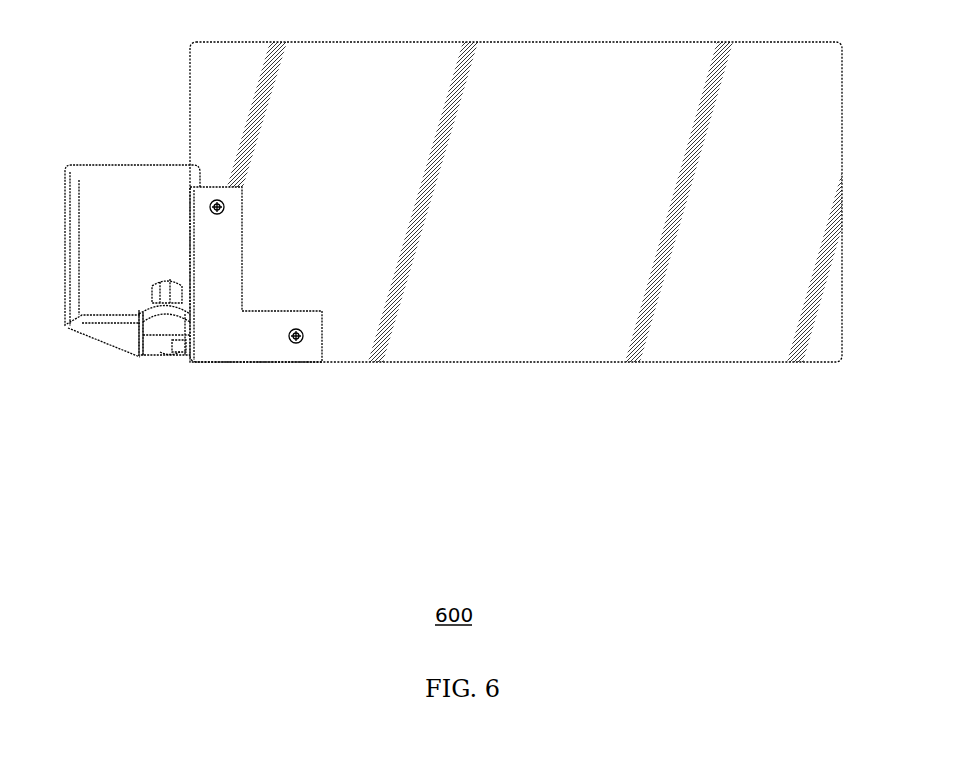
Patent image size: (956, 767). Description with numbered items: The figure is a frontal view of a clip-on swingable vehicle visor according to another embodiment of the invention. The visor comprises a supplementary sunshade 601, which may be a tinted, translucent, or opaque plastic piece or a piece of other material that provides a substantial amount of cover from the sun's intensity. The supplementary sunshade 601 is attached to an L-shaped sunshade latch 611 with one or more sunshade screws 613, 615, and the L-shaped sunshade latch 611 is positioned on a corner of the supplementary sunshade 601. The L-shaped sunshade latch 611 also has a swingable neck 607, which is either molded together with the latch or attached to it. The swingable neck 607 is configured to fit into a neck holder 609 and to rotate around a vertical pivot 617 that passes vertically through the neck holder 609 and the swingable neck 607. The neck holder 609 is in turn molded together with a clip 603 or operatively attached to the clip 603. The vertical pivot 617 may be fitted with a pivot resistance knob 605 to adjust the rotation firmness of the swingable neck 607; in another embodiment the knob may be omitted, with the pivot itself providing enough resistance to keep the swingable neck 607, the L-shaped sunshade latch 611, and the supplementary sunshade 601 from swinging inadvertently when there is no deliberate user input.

The supplementary sunshade 601 is at (538, 245).
The clip 603 is at (112, 210).
The pivot resistance knob 605 is at (140, 293).
The swingable neck 607 is at (158, 328).
The neck holder 609 is at (180, 342).
The L-shaped sunshade latch 611 is at (238, 333).
The sunshade screw 613 is at (305, 342).
The sunshade screw 615 is at (208, 202).
The vertical pivot 617 is at (170, 353).